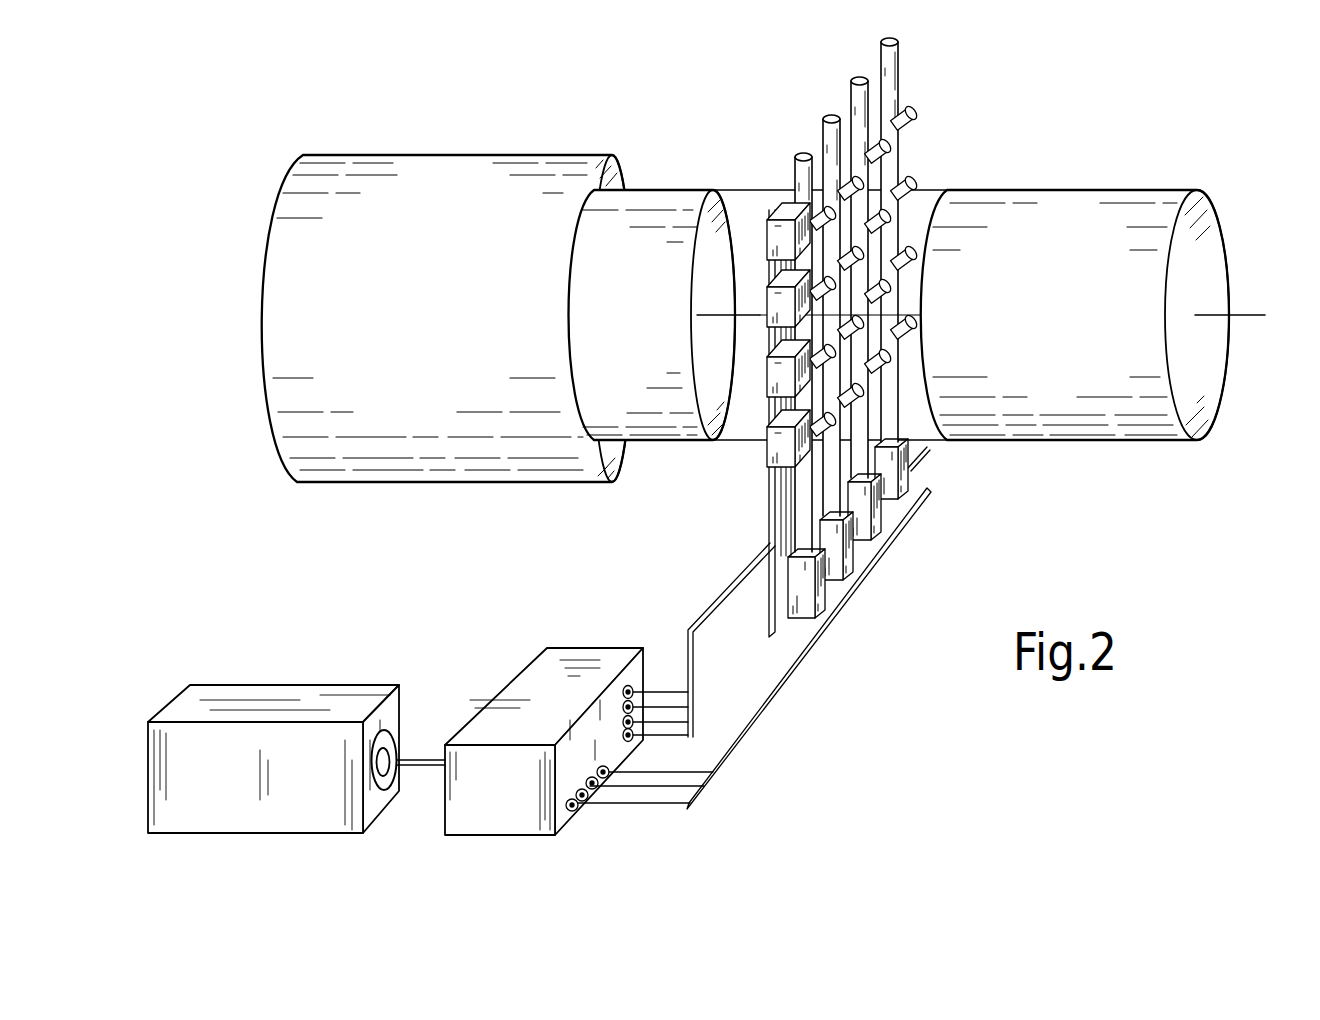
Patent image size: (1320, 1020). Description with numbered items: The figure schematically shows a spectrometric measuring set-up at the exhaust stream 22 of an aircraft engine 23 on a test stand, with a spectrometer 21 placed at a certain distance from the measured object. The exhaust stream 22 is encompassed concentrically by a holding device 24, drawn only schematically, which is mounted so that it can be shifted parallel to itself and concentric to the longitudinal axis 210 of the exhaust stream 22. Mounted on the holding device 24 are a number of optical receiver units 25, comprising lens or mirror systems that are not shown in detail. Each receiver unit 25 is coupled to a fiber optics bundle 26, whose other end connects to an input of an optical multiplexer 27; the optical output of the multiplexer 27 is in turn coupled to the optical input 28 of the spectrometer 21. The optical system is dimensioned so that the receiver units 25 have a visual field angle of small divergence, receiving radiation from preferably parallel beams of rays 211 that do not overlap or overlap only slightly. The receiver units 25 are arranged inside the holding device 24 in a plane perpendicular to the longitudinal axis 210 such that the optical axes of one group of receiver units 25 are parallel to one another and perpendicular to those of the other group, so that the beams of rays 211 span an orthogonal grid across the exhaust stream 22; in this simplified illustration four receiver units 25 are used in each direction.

The spectrometer 21 is at (237, 700).
The exhaust stream 22 is at (633, 397).
The aircraft engine 23 is at (455, 213).
The holding device 24 is at (793, 632).
The optical receiver units 25 is at (768, 300).
The fiber optics bundle 26 is at (650, 767).
The optical multiplexer 27 is at (518, 695).
The optical input 28 is at (388, 745).
The longitudinal axis 210 is at (1243, 312).
The beams of rays 211 is at (826, 115).